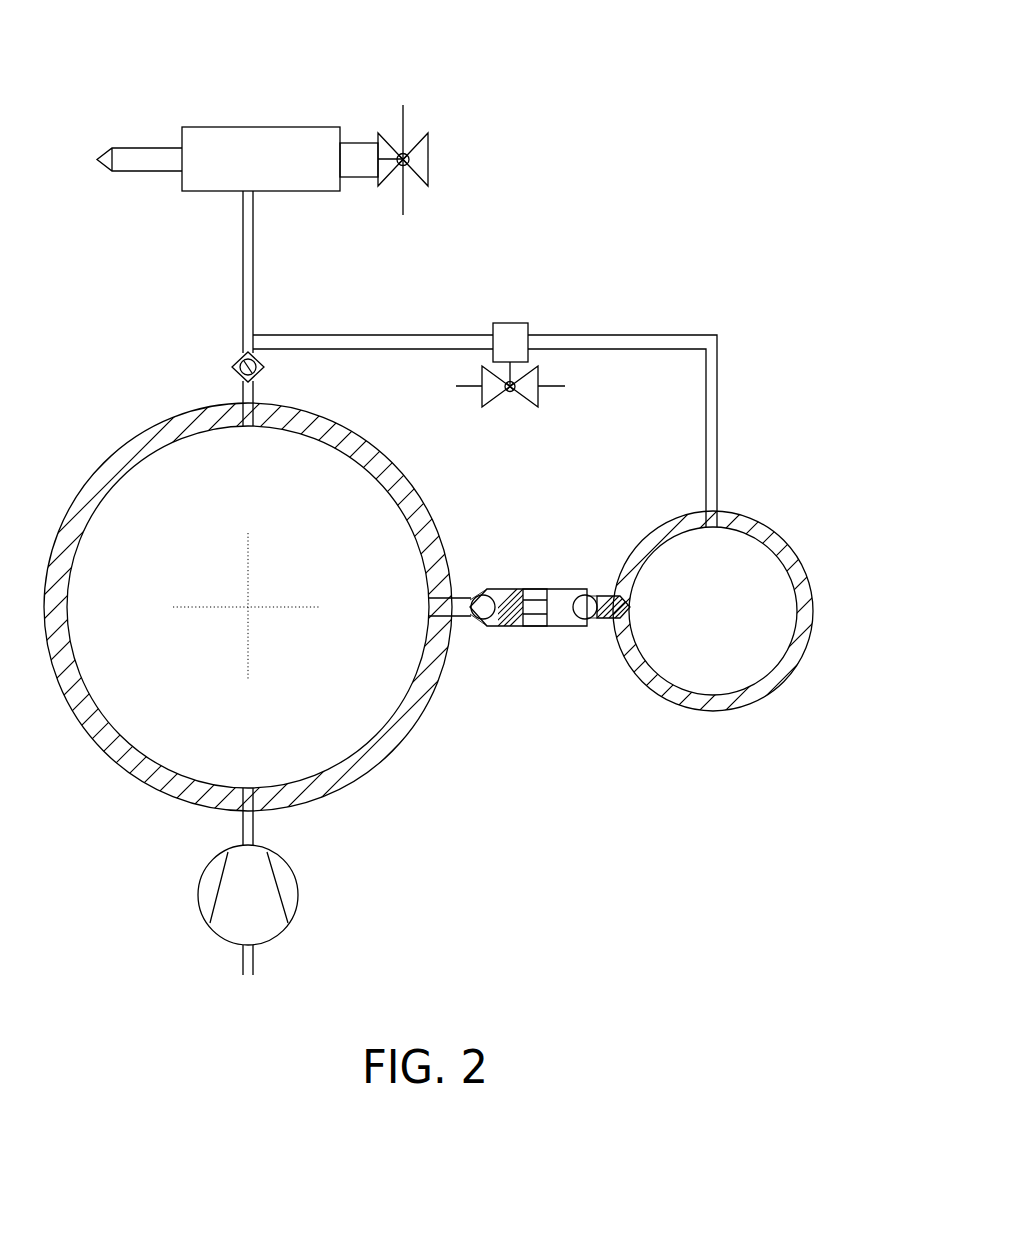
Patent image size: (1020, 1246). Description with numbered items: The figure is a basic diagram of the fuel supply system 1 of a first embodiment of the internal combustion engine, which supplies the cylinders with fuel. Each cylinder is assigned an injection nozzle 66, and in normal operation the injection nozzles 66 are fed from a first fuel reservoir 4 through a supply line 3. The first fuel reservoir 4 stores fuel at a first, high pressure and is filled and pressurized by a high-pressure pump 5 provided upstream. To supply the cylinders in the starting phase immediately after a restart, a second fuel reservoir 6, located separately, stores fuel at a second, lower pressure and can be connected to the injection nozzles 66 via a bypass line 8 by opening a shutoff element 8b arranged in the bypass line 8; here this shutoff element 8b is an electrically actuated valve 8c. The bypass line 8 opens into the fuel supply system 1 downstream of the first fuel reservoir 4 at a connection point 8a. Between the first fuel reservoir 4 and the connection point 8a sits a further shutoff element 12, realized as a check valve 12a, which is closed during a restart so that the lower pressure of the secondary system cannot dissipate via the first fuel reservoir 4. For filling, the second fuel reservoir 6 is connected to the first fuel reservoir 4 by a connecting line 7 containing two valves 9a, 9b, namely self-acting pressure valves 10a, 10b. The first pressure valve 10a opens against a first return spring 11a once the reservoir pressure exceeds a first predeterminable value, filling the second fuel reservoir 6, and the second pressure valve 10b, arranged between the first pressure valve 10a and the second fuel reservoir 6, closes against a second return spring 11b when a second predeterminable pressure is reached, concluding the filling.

The fuel supply system 1 is at (95, 412).
The supply line 3 is at (247, 243).
The first fuel reservoir 4 is at (336, 567).
The high-pressure pump 5 is at (225, 895).
The second fuel reservoir 6 is at (746, 576).
The connecting line 7 is at (533, 590).
The bypass line 8 is at (660, 337).
The connection point 8a is at (257, 333).
The shutoff element 8b is at (508, 332).
The valve 8c is at (510, 384).
The first valve 9a is at (497, 671).
The second valve 9b is at (629, 674).
The first pressure valve 10a is at (475, 632).
The second pressure valve 10b is at (602, 632).
The first return spring 11a is at (483, 595).
The second return spring 11b is at (585, 595).
The further shutoff element 12 is at (232, 358).
The check valve 12a is at (248, 367).
The injection nozzle 66 is at (198, 133).